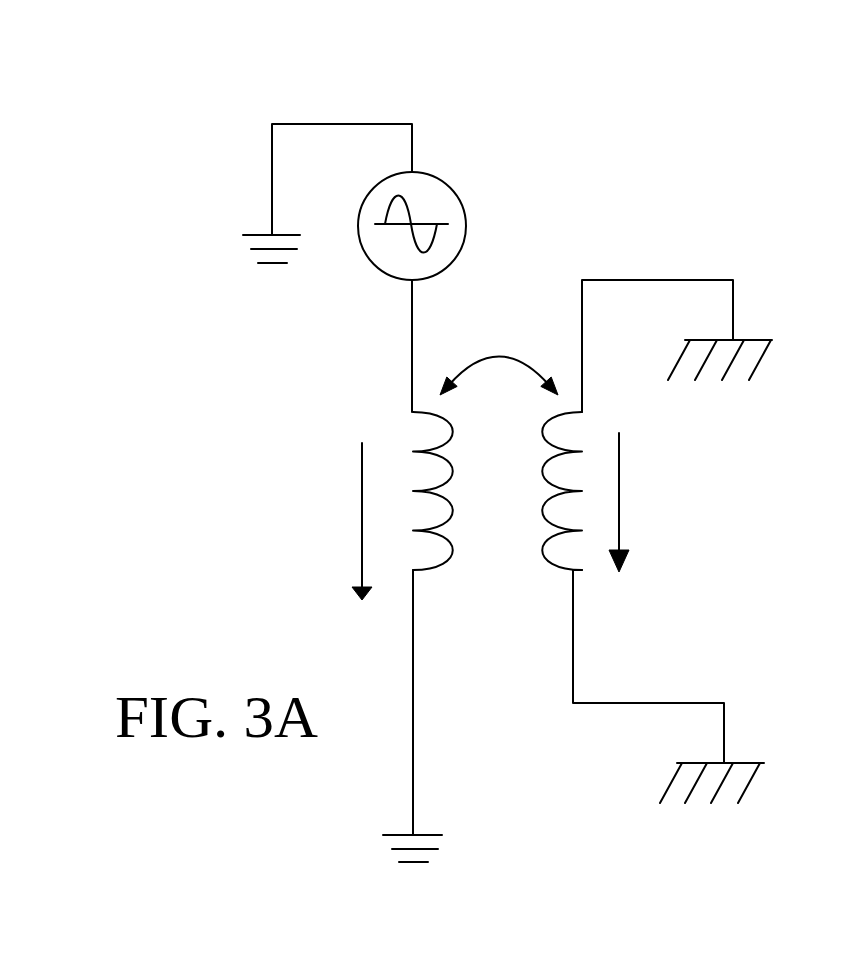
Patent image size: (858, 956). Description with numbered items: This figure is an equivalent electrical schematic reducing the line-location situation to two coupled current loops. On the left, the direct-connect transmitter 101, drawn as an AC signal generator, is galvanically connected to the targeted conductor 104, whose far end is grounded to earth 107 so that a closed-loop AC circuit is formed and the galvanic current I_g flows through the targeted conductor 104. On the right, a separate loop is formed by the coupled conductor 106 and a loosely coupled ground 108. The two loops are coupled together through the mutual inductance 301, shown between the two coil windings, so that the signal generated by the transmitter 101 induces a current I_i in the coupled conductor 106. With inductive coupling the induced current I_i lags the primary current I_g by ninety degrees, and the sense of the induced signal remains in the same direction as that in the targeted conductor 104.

The direct-connect transmitter 101 is at (468, 192).
The targeted conductor 104 is at (347, 483).
The coupled conductor 106 is at (655, 508).
The earth ground 107 is at (240, 210).
The loosely coupled ground 108 is at (768, 320).
The mutual inductance 301 is at (515, 300).